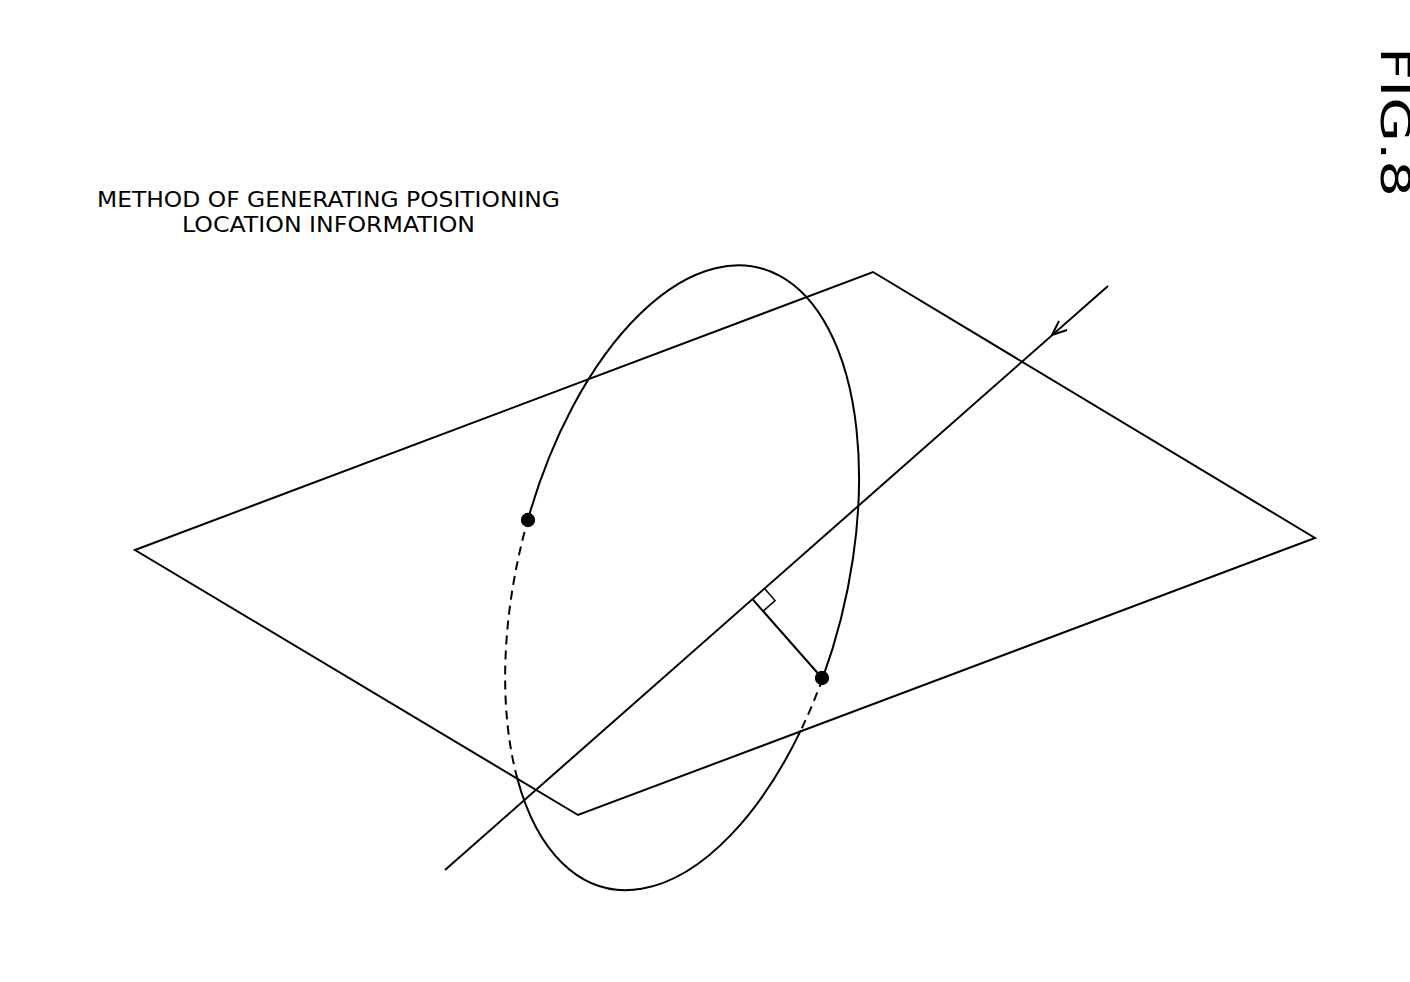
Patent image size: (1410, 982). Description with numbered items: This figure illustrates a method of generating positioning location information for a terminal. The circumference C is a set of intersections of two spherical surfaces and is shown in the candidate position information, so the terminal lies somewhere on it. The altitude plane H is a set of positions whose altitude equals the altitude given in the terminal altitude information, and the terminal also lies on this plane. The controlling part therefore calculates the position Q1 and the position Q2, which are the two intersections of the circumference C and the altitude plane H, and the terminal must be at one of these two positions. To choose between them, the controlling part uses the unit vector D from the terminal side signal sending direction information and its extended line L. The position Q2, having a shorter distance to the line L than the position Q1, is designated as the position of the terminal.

The altitude plane H is at (325, 480).
The circumference C is at (723, 238).
The line L is at (472, 846).
The unit vector D is at (1078, 308).
The position Q1 is at (535, 520).
The position Q2 is at (815, 678).